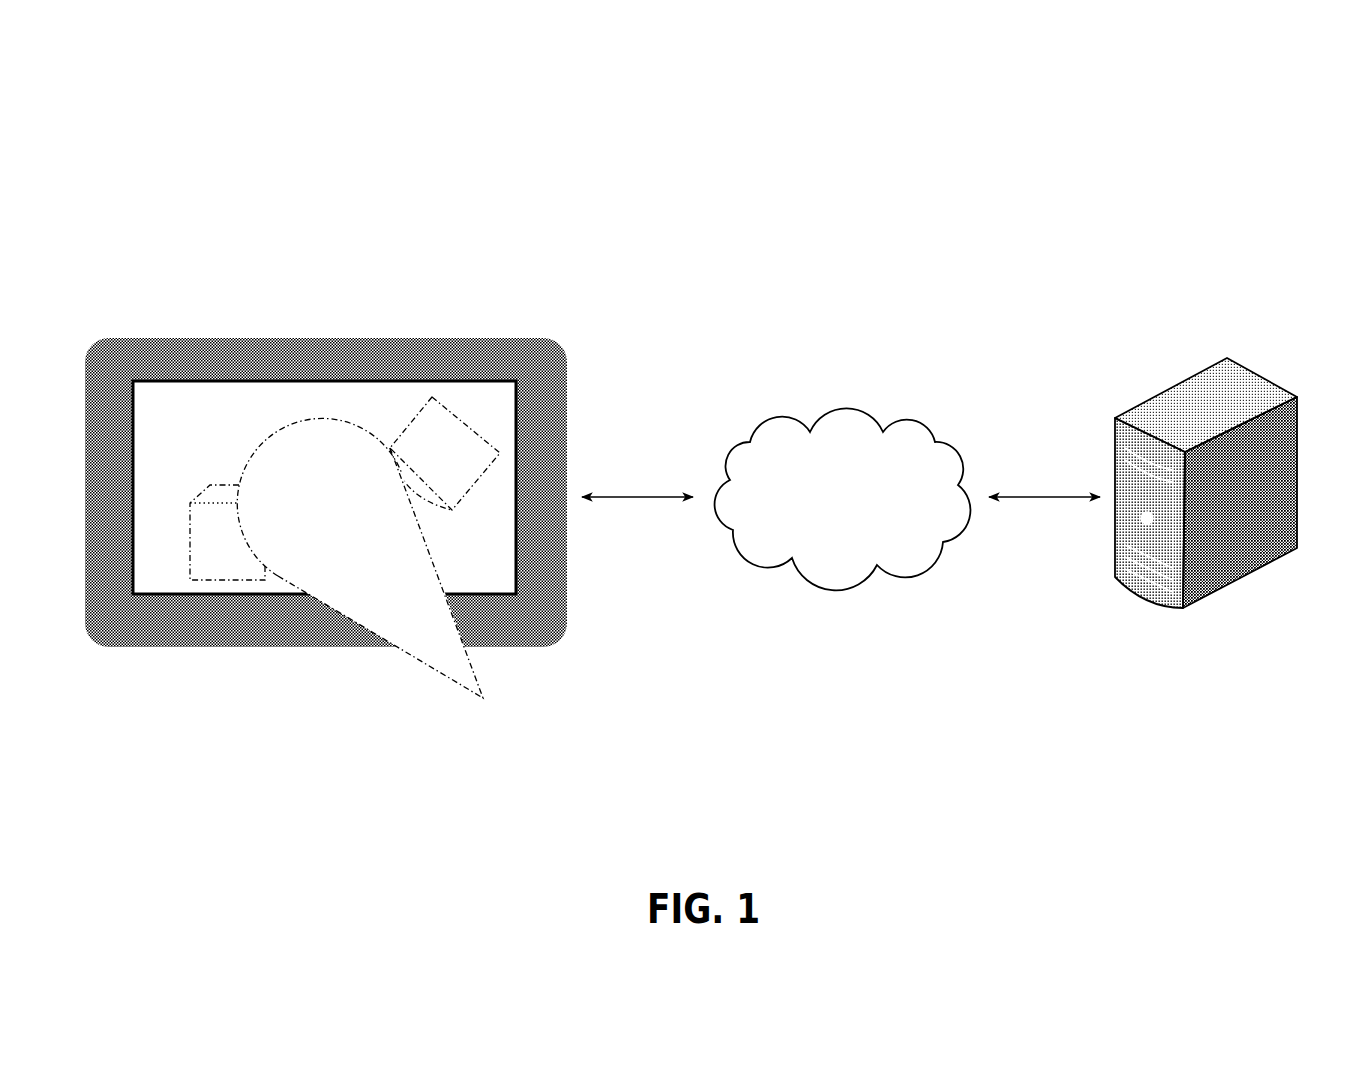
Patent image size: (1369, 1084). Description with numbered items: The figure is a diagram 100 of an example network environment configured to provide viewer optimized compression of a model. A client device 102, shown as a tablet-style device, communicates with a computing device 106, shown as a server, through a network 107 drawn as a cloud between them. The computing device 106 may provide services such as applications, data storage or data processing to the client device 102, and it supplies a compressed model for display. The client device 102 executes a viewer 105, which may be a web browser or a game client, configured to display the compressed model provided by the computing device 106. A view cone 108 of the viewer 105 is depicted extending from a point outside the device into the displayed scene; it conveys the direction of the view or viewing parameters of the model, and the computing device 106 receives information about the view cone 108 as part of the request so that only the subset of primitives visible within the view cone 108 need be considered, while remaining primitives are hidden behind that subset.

The diagram 100 is at (1220, 117).
The client device 102 is at (308, 326).
The viewer 105 is at (319, 484).
The computing device 106 is at (1183, 341).
The network 107 is at (898, 406).
The view cone 108 is at (486, 712).